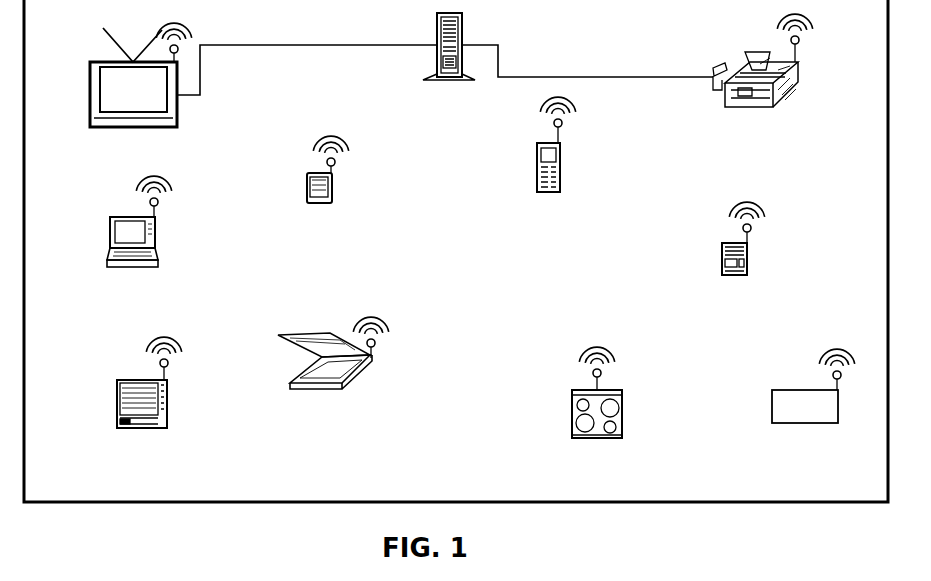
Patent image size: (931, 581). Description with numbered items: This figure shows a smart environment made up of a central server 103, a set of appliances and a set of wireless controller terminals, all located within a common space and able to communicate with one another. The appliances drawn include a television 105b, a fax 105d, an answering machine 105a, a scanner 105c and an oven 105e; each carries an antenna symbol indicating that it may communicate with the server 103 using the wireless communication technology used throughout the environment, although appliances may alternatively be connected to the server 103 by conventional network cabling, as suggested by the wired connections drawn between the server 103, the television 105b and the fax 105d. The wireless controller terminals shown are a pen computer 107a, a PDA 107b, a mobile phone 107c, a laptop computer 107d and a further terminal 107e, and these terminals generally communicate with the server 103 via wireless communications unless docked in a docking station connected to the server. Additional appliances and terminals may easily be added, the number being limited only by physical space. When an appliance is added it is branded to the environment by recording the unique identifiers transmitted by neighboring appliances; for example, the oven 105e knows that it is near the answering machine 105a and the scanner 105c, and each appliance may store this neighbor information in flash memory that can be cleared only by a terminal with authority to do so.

The central server 103 is at (449, 56).
The answering machine 105a is at (736, 265).
The television 105b is at (141, 93).
The scanner 105c is at (333, 370).
The fax 105d is at (763, 77).
The oven 105e is at (597, 412).
The pen computer 107a is at (141, 400).
The PDA 107b is at (326, 189).
The mobile phone 107c is at (551, 161).
The laptop computer 107d is at (133, 239).
The wireless controller terminal 107e is at (813, 386).